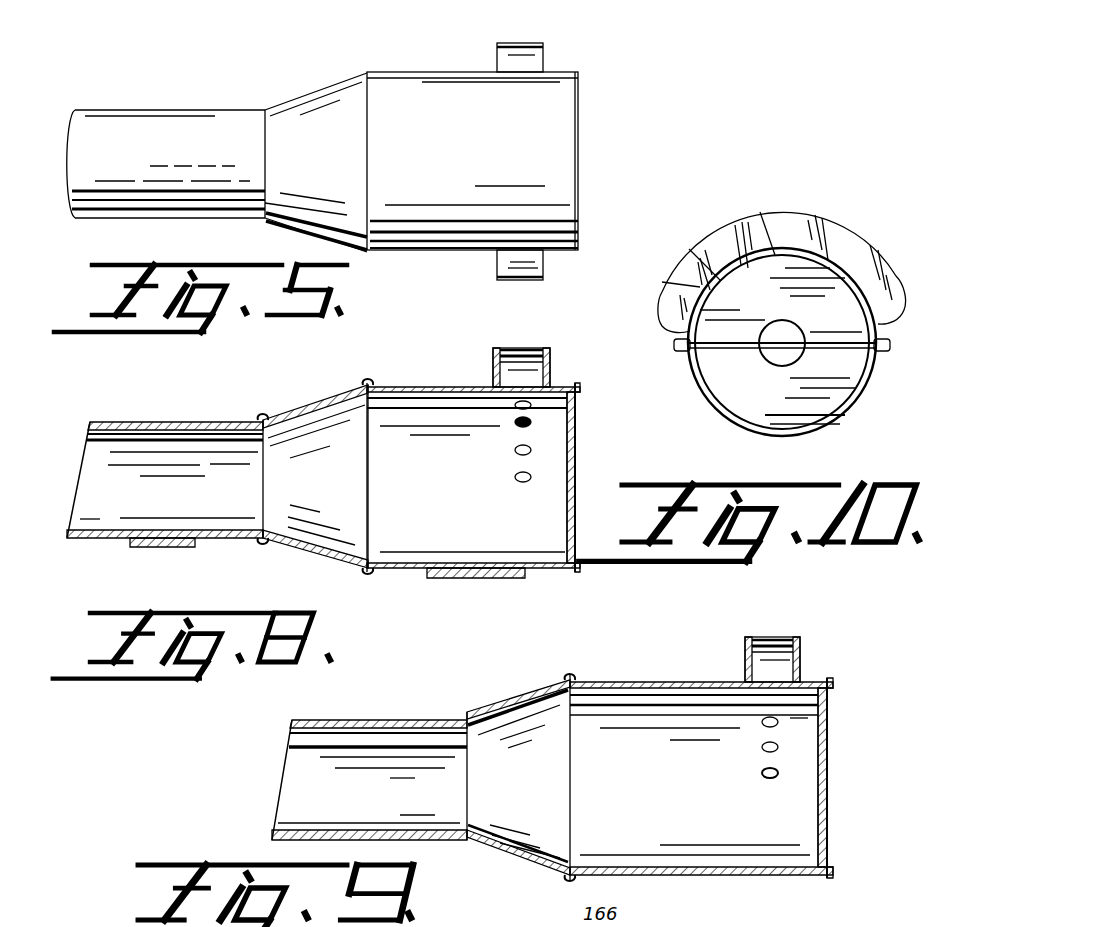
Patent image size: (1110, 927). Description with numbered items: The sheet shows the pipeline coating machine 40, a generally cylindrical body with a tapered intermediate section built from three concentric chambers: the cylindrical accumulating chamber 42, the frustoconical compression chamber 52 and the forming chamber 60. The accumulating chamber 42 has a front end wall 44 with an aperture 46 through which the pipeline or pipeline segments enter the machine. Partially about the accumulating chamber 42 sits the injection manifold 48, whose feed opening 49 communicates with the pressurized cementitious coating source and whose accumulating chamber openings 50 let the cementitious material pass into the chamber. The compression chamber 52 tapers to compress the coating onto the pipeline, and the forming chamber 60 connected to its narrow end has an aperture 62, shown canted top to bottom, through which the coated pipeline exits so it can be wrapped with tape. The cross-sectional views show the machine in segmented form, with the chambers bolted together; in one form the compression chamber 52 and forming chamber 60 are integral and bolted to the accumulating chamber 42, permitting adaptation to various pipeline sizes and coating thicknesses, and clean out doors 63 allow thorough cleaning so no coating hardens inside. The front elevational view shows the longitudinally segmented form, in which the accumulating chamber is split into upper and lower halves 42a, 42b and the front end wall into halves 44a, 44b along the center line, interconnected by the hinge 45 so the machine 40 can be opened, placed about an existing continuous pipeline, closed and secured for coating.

In FIG. 5, the pipeline coating machine 40 is at (350, 68).
In FIG. 8, the pipeline coating machine 40 is at (410, 383).
In FIG. 5, the accumulating chamber 42 is at (403, 95).
In FIG. 8, the accumulating chamber 42 is at (445, 387).
In FIG. 9, the accumulating chamber 42 is at (640, 683).
In FIG. 10, the upper half of accumulating chamber 42a is at (690, 283).
In FIG. 10, the lower half of accumulating chamber 42b is at (800, 428).
In FIG. 8, the front end wall 44 is at (575, 415).
In FIG. 9, the front end wall 44 is at (828, 730).
In FIG. 10, the upper half of front end wall 44a is at (752, 285).
In FIG. 10, the lower half of front end wall 44b is at (735, 380).
In FIG. 10, the hinge 45 is at (678, 348).
In FIG. 10, the aperture 46 is at (790, 330).
In FIG. 8, the aperture 46 is at (575, 470).
In FIG. 9, the aperture 46 is at (828, 765).
In FIG. 5, the injection manifold 48 is at (520, 57).
In FIG. 10, the injection manifold 48 is at (795, 222).
In FIG. 8, the injection manifold 48 is at (548, 352).
In FIG. 9, the injection manifold 48 is at (802, 660).
In FIG. 8, the feed opening 49 is at (522, 350).
In FIG. 9, the feed opening 49 is at (773, 640).
In FIG. 8, the accumulating chamber openings 50 is at (525, 392).
In FIG. 9, the accumulating chamber openings 50 is at (772, 690).
In FIG. 5, the compression chamber 52 is at (318, 115).
In FIG. 8, the compression chamber 52 is at (322, 405).
In FIG. 9, the compression chamber 52 is at (512, 705).
In FIG. 5, the forming chamber 60 is at (203, 133).
In FIG. 8, the forming chamber 60 is at (180, 420).
In FIG. 9, the forming chamber 60 is at (372, 720).
In FIG. 8, the aperture 62 is at (80, 470).
In FIG. 9, the aperture 62 is at (285, 775).
In FIG. 8, the clean out doors 63 is at (152, 547).